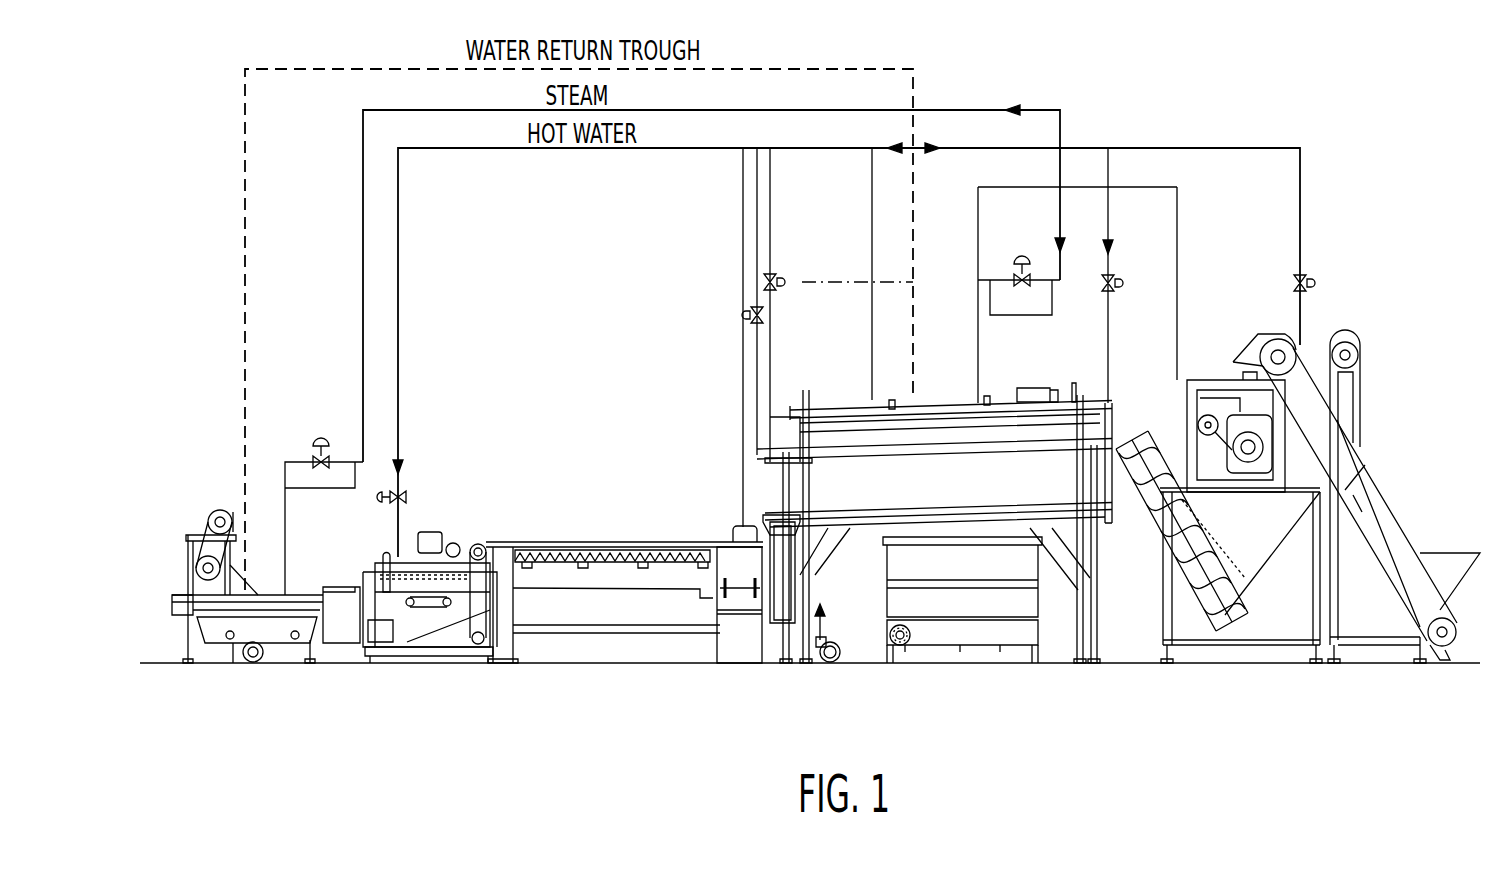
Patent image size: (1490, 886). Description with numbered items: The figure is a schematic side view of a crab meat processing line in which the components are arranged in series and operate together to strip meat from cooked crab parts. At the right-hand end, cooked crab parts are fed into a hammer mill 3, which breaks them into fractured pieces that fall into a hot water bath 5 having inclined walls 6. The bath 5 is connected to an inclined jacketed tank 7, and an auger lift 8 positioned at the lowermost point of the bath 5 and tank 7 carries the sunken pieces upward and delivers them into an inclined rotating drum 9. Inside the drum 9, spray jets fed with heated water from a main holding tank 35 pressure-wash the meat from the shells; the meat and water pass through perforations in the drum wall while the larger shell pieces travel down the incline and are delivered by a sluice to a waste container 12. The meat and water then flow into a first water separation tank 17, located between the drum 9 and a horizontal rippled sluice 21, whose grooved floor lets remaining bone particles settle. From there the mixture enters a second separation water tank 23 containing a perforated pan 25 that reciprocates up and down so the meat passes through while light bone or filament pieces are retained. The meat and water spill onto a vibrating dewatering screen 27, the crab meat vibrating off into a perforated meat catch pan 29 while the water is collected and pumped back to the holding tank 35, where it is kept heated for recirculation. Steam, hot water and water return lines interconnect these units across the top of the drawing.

The hammer mill 3 is at (1218, 380).
The hot water bath 5 is at (1282, 553).
The inclined walls 6 is at (1265, 530).
The inclined jacketed tank 7 is at (1158, 540).
The auger lift 8 is at (1197, 605).
The inclined rotating drum 9 is at (945, 445).
The waste container 12 is at (768, 525).
The first water separation tank 17 is at (742, 600).
The horizontal rippled sluice 21 is at (568, 552).
The second separation water tank 23 is at (397, 555).
The perforated pan 25 is at (392, 592).
The vibrating dewatering screen 27 is at (290, 596).
The perforated meat catch pan 29 is at (172, 607).
The main holding tank 35 is at (975, 568).